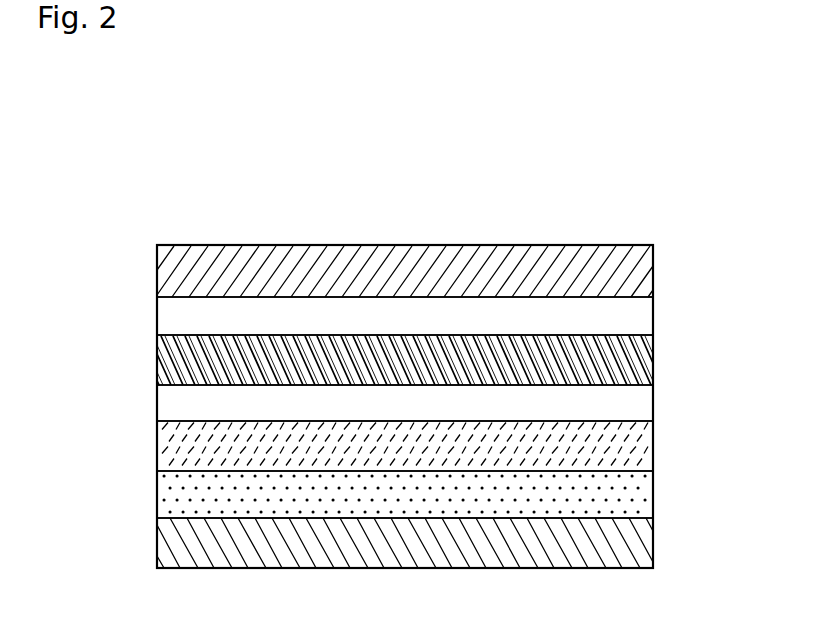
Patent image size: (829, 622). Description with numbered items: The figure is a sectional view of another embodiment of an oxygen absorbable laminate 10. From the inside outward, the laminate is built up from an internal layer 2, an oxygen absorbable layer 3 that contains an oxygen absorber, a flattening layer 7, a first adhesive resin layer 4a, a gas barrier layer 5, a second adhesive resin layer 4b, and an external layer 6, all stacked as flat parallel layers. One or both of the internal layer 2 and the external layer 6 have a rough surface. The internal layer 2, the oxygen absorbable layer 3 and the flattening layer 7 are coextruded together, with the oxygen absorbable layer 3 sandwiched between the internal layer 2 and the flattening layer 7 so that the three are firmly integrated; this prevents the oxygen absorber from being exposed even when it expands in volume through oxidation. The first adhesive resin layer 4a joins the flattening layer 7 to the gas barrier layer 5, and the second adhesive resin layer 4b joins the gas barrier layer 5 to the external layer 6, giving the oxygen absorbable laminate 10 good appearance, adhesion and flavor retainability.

The oxygen absorbable laminate 10 is at (641, 194).
The external layer 6 is at (643, 264).
The second adhesive resin layer 4b is at (643, 316).
The gas barrier layer 5 is at (643, 365).
The first adhesive resin layer 4a is at (643, 409).
The flattening layer 7 is at (643, 450).
The oxygen absorbable layer 3 is at (643, 503).
The internal layer 2 is at (643, 552).